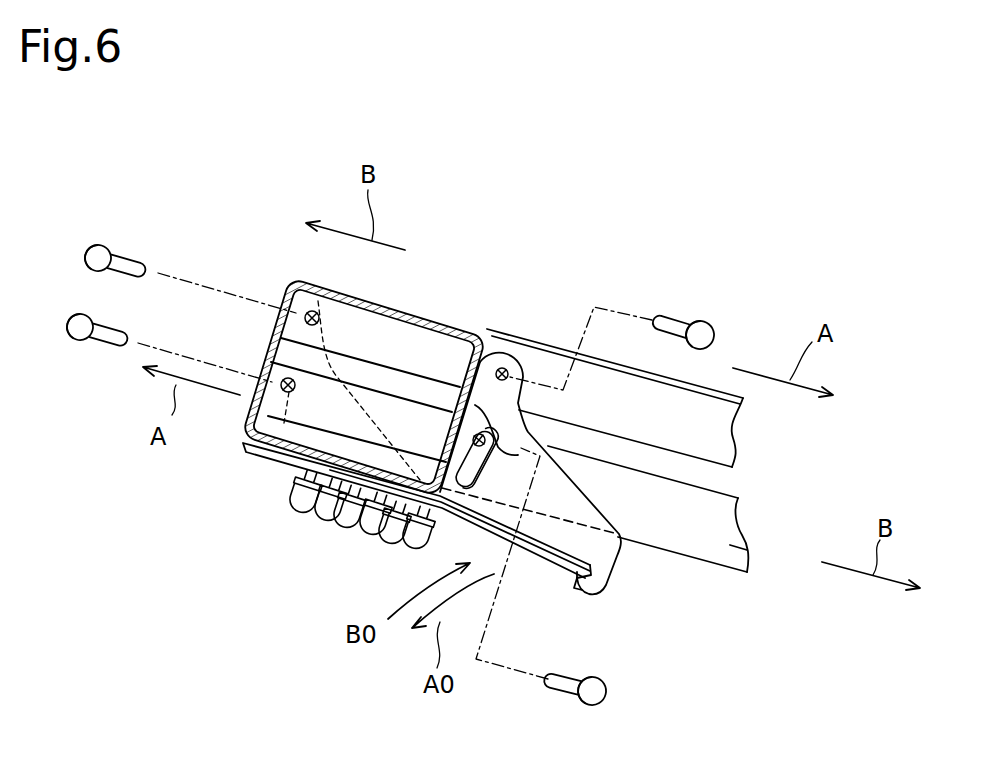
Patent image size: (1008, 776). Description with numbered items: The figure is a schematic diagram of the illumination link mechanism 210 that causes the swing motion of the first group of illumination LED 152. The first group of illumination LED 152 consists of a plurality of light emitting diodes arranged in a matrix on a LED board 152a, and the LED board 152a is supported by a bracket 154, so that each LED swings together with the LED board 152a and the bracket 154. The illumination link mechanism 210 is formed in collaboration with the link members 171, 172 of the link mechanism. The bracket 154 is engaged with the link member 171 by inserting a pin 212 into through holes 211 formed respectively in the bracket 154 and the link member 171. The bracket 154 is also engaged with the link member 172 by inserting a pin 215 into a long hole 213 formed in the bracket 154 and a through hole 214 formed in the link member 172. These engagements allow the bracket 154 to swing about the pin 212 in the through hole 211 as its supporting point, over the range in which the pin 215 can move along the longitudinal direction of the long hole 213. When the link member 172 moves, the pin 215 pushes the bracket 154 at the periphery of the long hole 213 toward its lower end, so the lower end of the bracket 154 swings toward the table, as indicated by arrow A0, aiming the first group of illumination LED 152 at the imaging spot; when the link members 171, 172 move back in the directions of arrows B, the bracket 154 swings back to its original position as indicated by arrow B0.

The first group of illumination LED 152 is at (321, 554).
The LED board 152a is at (255, 452).
The bracket 154 is at (572, 517).
The link member 171 is at (448, 337).
The link member 172 is at (733, 545).
The illumination link mechanism 210 is at (644, 580).
The through holes 211 is at (311, 311).
The pin 212 is at (112, 248).
The long hole 213 is at (287, 378).
The through hole 214 is at (467, 388).
The pin 215 is at (97, 337).